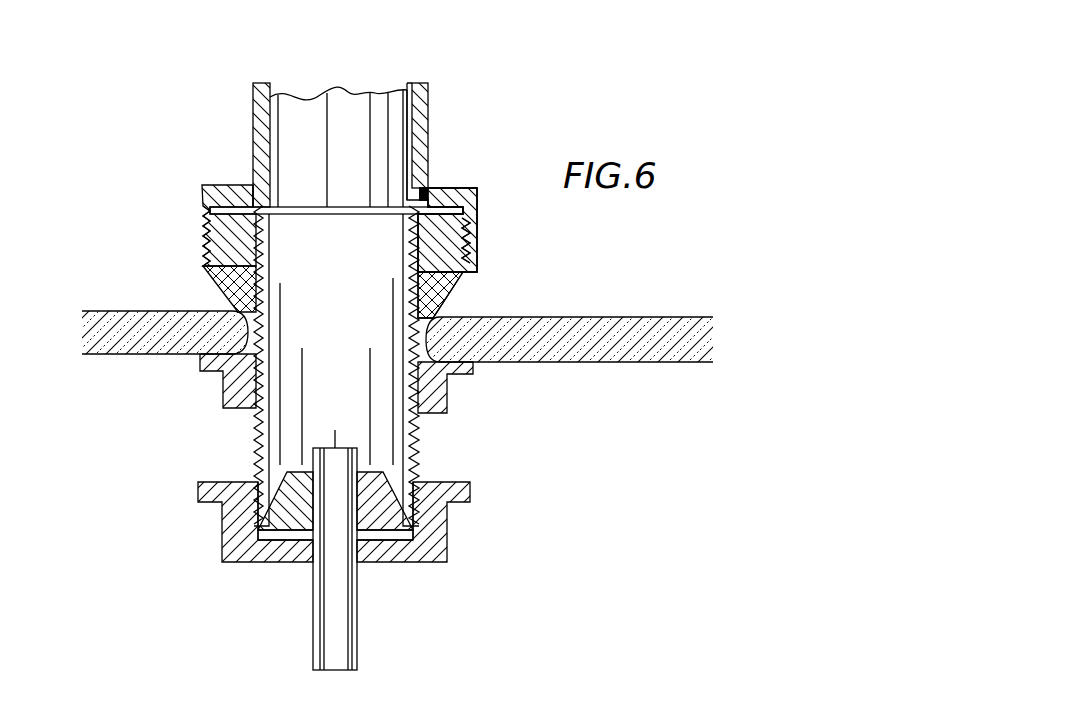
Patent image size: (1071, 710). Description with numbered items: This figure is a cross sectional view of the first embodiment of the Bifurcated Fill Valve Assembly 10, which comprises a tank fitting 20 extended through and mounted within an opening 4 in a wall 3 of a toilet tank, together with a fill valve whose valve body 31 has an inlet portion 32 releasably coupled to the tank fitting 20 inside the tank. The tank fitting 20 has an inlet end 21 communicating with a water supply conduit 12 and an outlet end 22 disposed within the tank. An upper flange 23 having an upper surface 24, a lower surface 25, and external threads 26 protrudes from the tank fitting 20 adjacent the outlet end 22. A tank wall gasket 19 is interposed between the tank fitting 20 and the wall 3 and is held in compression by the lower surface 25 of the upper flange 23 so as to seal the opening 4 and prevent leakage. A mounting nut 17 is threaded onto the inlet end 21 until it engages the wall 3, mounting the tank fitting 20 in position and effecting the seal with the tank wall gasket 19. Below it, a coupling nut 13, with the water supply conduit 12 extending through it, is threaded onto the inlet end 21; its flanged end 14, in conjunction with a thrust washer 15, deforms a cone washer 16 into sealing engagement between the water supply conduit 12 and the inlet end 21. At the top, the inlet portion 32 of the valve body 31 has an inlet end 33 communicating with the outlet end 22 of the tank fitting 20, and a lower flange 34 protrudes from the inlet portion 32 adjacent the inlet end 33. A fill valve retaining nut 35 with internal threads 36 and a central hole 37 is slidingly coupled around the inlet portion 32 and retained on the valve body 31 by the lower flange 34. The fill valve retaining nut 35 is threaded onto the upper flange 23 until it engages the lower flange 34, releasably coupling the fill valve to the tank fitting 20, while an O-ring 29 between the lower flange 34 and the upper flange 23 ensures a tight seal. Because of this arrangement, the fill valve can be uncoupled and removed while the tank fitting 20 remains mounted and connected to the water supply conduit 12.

The wall 3 is at (132, 338).
The opening 4 is at (223, 380).
The Bifurcated Fill Valve Assembly 10 is at (617, 248).
The water supply conduit 12 is at (336, 645).
The coupling nut 13 is at (445, 545).
The flanged end 14 is at (423, 540).
The thrust washer 15 is at (262, 548).
The cone washer 16 is at (405, 498).
The mounting nut 17 is at (440, 397).
The tank wall gasket 19 is at (233, 287).
The tank fitting 20 is at (461, 303).
The inlet end 21 is at (250, 512).
The outlet end 22 is at (227, 212).
The upper flange 23 is at (210, 227).
The upper surface 24 is at (227, 198).
The lower surface 25 is at (450, 288).
The external threads 26 is at (463, 232).
The O-ring 29 is at (247, 190).
The valve body 31 is at (421, 84).
The inlet portion 32 is at (416, 138).
The inlet end 33 is at (312, 205).
The lower flange 34 is at (472, 193).
The fill valve retaining nut 35 is at (478, 215).
The internal threads 36 is at (458, 250).
The central hole 37 is at (418, 185).